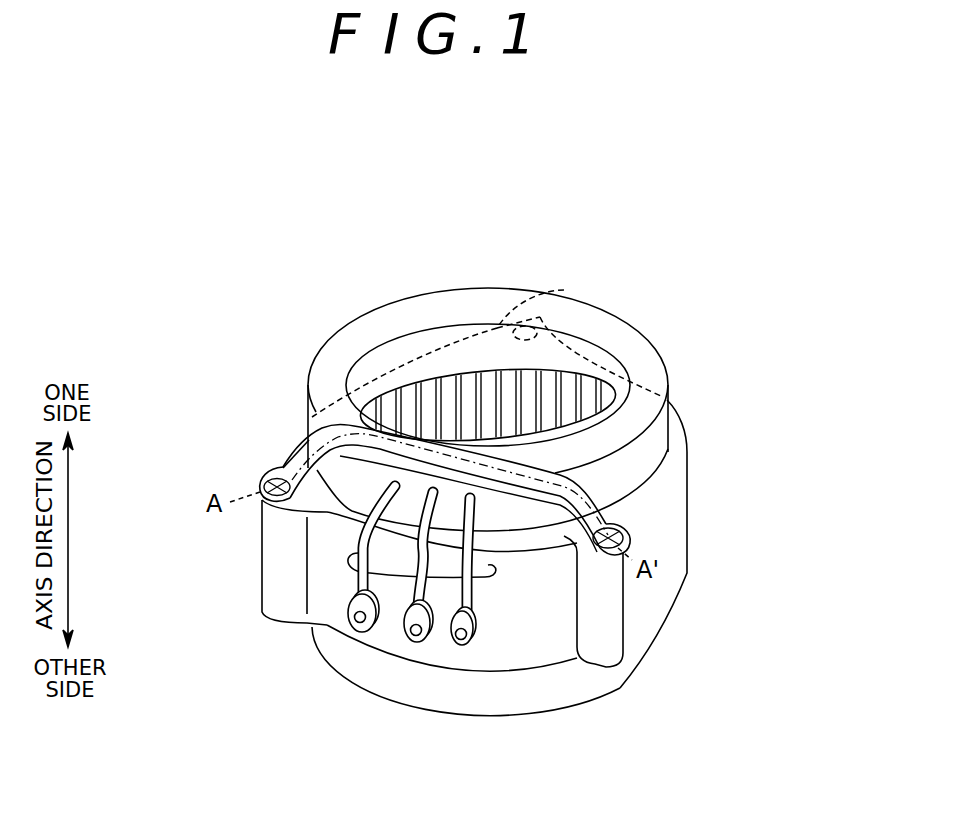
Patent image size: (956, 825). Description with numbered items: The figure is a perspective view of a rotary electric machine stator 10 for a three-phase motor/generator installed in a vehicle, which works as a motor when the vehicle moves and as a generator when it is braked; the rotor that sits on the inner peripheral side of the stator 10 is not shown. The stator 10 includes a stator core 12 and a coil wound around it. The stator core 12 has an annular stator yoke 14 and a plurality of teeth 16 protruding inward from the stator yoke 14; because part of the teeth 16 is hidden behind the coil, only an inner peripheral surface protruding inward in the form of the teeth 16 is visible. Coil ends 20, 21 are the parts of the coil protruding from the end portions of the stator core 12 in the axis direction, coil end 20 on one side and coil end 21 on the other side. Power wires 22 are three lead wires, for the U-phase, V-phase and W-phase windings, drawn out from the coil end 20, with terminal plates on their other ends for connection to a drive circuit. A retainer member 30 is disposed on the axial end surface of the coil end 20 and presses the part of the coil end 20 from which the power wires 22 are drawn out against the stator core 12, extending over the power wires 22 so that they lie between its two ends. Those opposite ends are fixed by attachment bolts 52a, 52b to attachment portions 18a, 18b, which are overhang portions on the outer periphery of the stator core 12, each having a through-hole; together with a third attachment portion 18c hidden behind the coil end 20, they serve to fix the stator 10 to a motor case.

The rotary electric machine stator 10 is at (217, 338).
The stator core 12 is at (783, 312).
The stator yoke 14 is at (671, 442).
The teeth 16 is at (524, 392).
The attachment portion 18a is at (281, 554).
The attachment portion 18b is at (611, 606).
The attachment portion 18c is at (564, 290).
The coil end 20 is at (331, 373).
The coil end 21 is at (337, 656).
The power wires 22 is at (489, 584).
The retainer member 30 is at (533, 479).
The attachment bolt 52a is at (282, 479).
The attachment bolt 52b is at (630, 537).